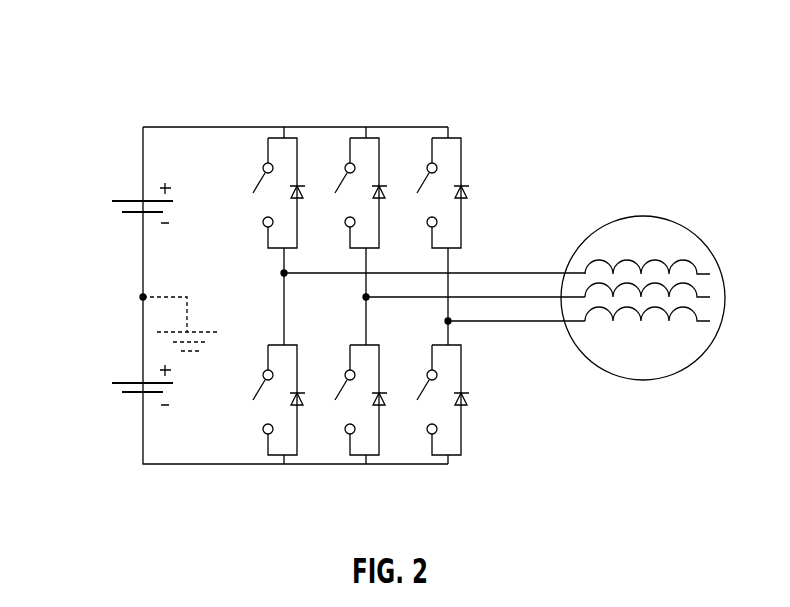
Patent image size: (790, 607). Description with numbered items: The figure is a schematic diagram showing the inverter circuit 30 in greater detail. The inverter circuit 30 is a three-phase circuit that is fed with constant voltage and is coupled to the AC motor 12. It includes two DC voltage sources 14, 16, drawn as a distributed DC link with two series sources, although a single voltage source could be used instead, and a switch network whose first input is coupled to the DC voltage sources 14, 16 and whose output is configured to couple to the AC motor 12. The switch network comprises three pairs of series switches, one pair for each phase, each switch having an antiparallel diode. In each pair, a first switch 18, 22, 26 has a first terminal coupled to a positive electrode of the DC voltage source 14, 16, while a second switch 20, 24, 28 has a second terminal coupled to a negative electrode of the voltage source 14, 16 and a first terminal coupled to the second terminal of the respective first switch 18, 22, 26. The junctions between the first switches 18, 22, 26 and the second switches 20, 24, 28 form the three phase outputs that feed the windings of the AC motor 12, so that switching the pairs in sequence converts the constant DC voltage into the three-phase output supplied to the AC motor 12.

The inverter circuit 30 is at (81, 58).
The DC voltage source 16 is at (127, 191).
The DC voltage source 14 is at (127, 399).
The first switch 18 is at (251, 186).
The second switch 20 is at (251, 392).
The first switch 22 is at (333, 186).
The second switch 24 is at (333, 392).
The first switch 26 is at (415, 186).
The second switch 28 is at (415, 392).
The AC motor 12 is at (659, 360).